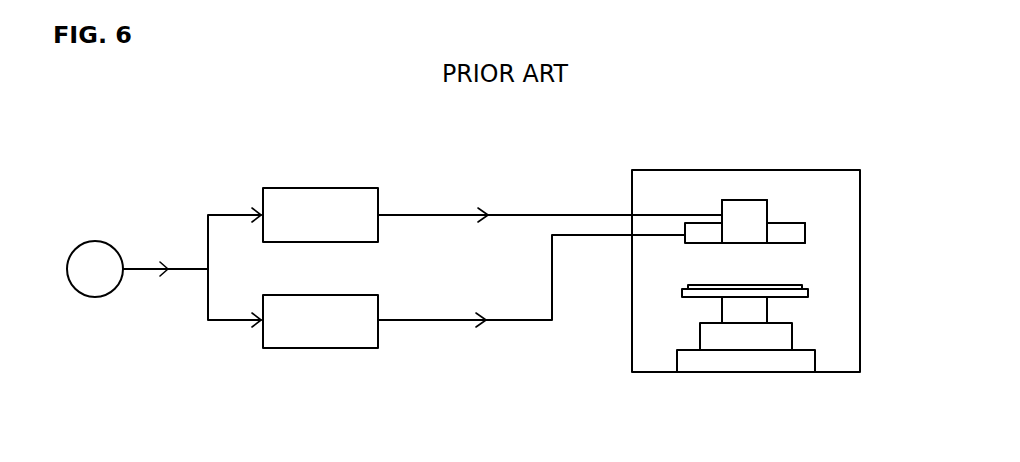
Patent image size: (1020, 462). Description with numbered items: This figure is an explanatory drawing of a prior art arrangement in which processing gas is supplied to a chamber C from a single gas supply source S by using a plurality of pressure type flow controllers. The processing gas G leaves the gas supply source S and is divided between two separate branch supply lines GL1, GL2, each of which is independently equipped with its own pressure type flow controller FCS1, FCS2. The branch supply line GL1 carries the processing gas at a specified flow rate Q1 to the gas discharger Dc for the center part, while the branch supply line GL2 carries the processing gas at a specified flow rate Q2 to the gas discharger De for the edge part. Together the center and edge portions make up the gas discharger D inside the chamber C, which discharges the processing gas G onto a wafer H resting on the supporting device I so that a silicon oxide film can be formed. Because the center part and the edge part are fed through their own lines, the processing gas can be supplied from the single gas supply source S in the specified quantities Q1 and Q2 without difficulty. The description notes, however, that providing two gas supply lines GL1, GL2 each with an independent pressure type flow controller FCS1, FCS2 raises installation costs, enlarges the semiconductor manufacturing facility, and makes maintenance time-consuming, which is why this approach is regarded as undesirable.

The gas supply source S is at (95, 269).
The processing gas G is at (167, 266).
The pressure type flow controller FCS1 is at (320, 215).
The pressure type flow controller FCS2 is at (320, 321).
The flow rate while dividing Q1 is at (487, 211).
The flow rate while dividing Q2 is at (485, 318).
The branch supply line for the center part GL1 is at (580, 213).
The branch supply line for the edge part GL2 is at (523, 322).
The chamber C is at (688, 169).
The gas discharger D is at (771, 202).
The gas discharger for the center part Dc is at (747, 212).
The gas discharger for the edge part De is at (792, 228).
The wafer H is at (767, 283).
The supporting device I is at (760, 310).